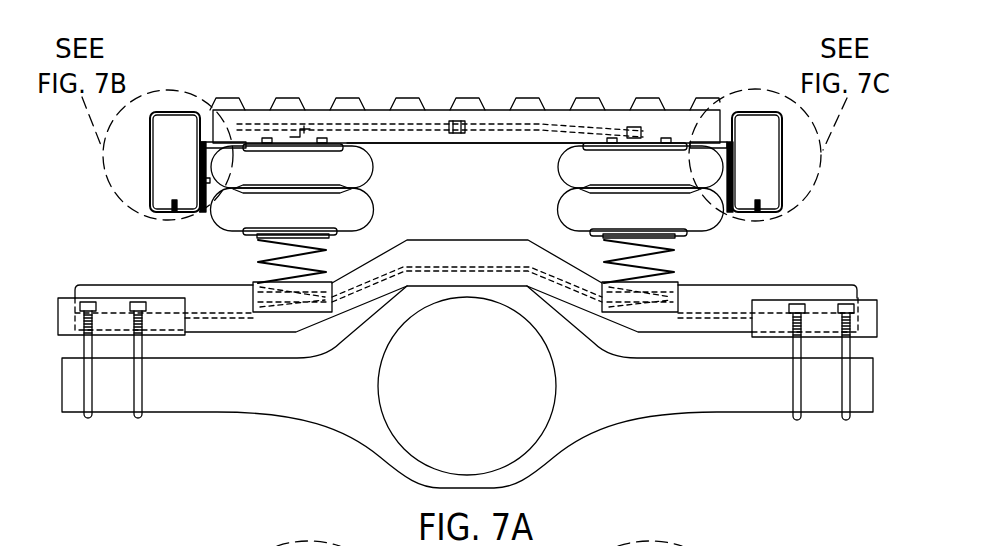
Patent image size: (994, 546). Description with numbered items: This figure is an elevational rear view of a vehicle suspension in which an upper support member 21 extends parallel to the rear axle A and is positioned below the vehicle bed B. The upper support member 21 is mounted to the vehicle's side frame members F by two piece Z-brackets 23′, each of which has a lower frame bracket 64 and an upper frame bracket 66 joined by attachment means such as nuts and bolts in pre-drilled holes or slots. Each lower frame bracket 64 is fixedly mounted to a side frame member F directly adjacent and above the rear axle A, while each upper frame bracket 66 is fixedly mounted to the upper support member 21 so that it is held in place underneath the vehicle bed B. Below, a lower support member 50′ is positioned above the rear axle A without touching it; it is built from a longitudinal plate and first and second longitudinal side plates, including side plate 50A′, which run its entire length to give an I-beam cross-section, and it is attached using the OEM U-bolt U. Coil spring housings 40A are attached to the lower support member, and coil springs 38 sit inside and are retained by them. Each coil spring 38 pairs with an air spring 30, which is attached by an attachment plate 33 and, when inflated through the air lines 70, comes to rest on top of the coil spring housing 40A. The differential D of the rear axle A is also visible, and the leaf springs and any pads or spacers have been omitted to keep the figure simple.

The side frame member F is at (172, 118).
The vehicle bed B is at (463, 104).
The rear axle A is at (207, 393).
The differential housing D is at (472, 393).
The U-bolt U is at (797, 420).
The upper support member 21 is at (500, 145).
The two piece Z-bracket 23′ is at (209, 203).
The air spring 30 is at (712, 172).
The attachment plate 33 is at (337, 231).
The coil spring 38 is at (678, 264).
The coil spring housing 40A is at (679, 297).
The lower support member 50′ is at (438, 223).
The first longitudinal side plate 50A′ is at (712, 330).
The lower frame bracket 64 is at (200, 212).
The upper frame bracket 66 is at (220, 142).
The air line 70 is at (544, 125).